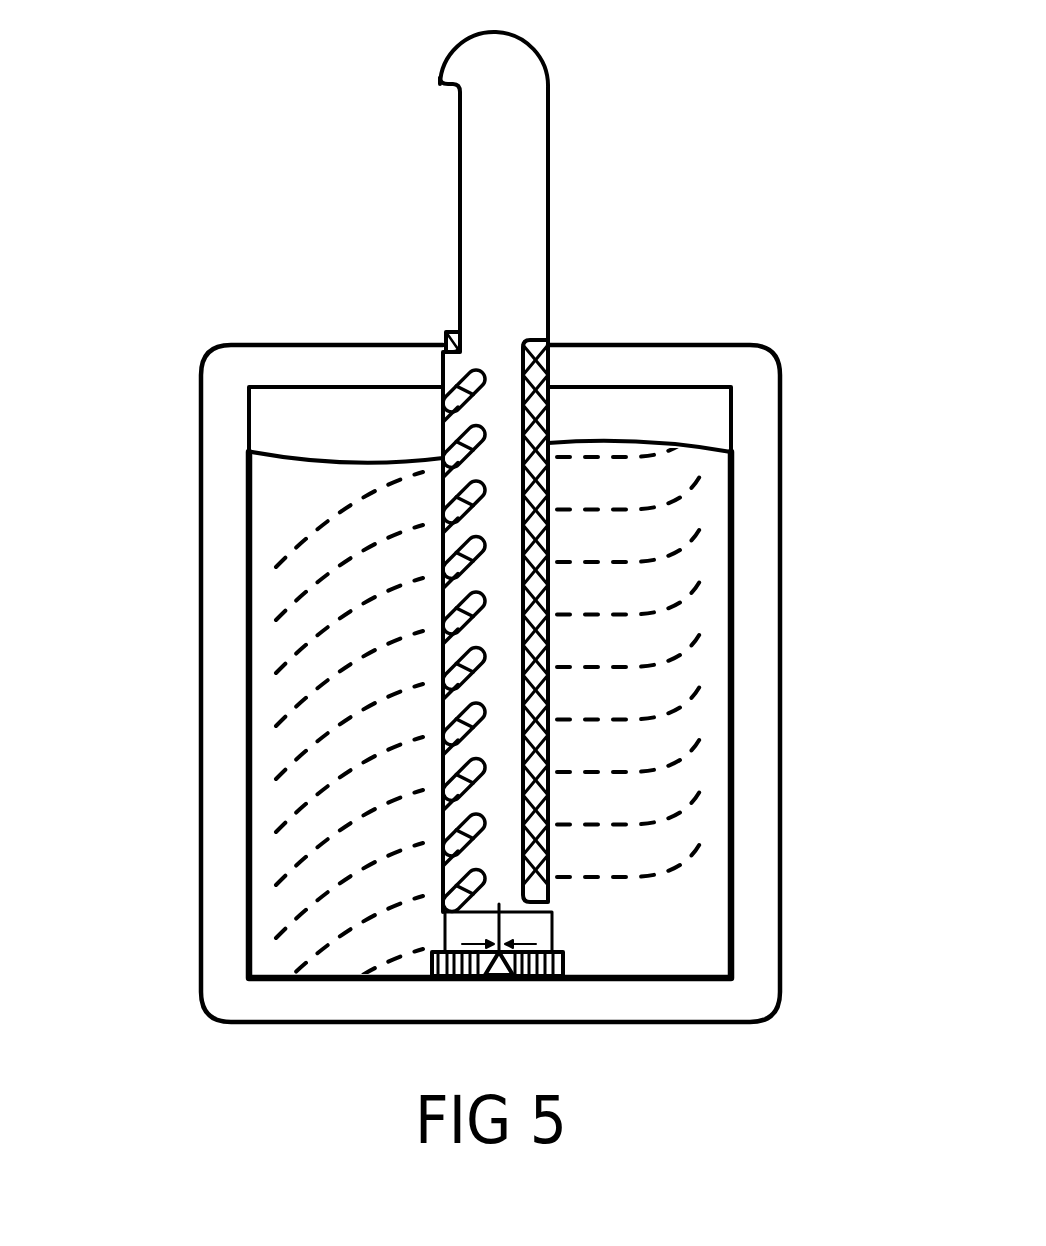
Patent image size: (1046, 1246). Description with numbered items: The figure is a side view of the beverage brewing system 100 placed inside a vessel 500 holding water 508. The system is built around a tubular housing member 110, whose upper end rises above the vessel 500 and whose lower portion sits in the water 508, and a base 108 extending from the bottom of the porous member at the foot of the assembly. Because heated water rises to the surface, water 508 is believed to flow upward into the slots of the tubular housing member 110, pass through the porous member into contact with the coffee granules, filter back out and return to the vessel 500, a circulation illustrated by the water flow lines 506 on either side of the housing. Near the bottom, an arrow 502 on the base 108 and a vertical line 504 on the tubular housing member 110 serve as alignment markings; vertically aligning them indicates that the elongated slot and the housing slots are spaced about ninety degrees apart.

The beverage brewing system 100 is at (560, 138).
The tubular housing member 110 is at (490, 205).
The vessel 500 is at (636, 366).
The water 508 is at (292, 495).
The water flow lines 506 is at (617, 565).
The base 108 is at (435, 981).
The arrow 502 is at (482, 970).
The vertical line 504 is at (550, 922).